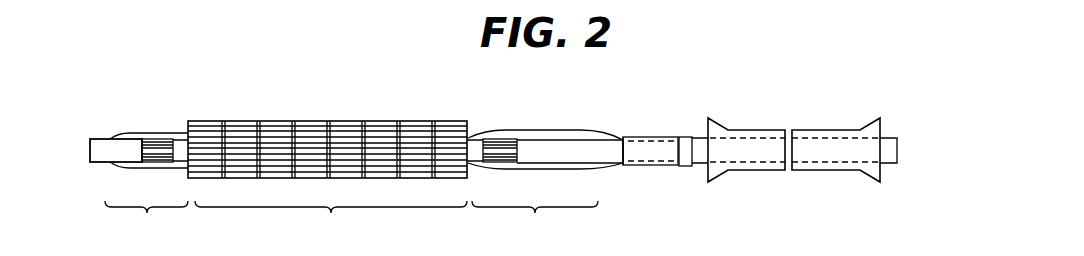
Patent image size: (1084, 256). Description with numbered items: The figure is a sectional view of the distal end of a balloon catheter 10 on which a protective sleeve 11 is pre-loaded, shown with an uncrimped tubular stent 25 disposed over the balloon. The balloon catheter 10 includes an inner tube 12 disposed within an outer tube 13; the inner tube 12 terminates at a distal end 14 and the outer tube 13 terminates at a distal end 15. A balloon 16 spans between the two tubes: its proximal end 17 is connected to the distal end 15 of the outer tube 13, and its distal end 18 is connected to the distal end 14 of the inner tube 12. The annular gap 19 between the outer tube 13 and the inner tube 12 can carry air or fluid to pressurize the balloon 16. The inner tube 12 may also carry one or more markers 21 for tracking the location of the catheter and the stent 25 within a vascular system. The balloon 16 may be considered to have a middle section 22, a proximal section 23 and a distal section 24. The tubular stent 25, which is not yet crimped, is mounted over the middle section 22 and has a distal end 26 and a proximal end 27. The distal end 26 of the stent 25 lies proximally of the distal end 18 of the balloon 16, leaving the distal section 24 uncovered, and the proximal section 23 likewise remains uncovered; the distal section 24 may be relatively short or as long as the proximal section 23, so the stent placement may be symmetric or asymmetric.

The balloon catheter 10 is at (613, 117).
The protective sleeve 11 is at (782, 129).
The inner tube 12 is at (685, 135).
The outer tube 13 is at (671, 134).
The distal end of the inner tube 14 is at (92, 138).
The distal end of the outer tube 15 is at (623, 140).
The balloon 16 is at (547, 127).
The proximal end of the balloon 17 is at (614, 170).
The distal end of the balloon 18 is at (113, 162).
The annular gap 19 is at (686, 167).
The marker 21 is at (152, 138).
The middle section of the balloon 22 is at (331, 224).
The proximal section of the balloon 23 is at (535, 224).
The distal section of the balloon 24 is at (146, 224).
The tubular stent 25 is at (277, 119).
The distal end of the stent 26 is at (188, 131).
The proximal end of the stent 27 is at (470, 121).